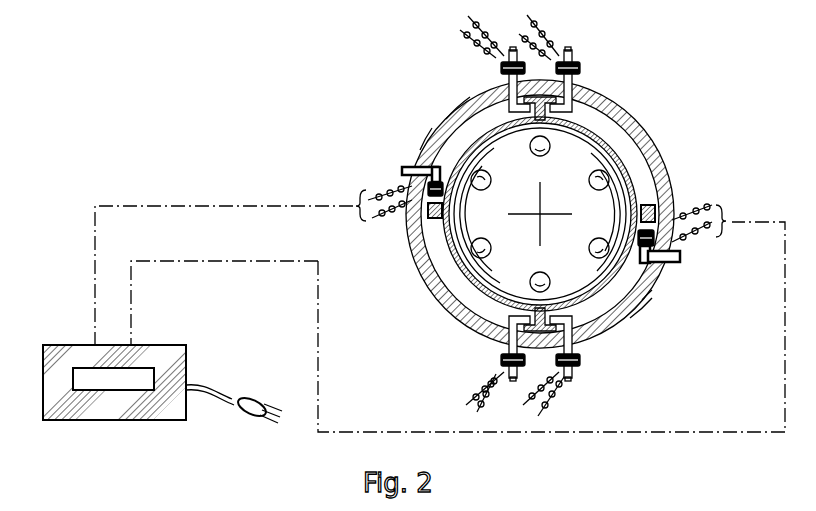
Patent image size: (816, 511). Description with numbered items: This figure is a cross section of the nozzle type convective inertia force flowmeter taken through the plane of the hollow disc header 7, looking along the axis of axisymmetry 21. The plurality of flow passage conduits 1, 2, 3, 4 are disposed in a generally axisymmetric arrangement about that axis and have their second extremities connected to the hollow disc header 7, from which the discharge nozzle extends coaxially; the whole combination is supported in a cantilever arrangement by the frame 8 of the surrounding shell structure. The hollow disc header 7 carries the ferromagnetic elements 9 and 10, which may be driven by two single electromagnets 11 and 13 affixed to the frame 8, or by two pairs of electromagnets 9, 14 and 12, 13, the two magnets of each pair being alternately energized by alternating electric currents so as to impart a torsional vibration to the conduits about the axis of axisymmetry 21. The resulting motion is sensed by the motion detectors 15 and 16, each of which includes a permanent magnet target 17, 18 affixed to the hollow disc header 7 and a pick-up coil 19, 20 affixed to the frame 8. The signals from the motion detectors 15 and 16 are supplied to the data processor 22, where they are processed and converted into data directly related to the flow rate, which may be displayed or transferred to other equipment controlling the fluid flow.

The flow passage conduit 1 is at (640, 140).
The flow passage conduit 2 is at (640, 188).
The flow passage conduit 3 is at (642, 302).
The flow passage conduit 4 is at (585, 312).
The hollow disc header 7 is at (458, 256).
The frame 8 is at (446, 118).
The ferromagnetic element 9 is at (560, 142).
The ferromagnetic element 10 is at (500, 296).
The electromagnet 11 is at (586, 106).
The electromagnet 12 is at (580, 332).
The electromagnet 13 is at (522, 222).
The electromagnet 14 is at (500, 108).
The motion detector 15 is at (400, 174).
The motion detector 16 is at (682, 254).
The permanent magnet target 17 is at (414, 236).
The permanent magnet target 18 is at (652, 202).
The pick-up coil 19 is at (423, 142).
The pick-up coil 20 is at (652, 284).
The axis of axisymmetry 21 is at (480, 292).
The data processor 22 is at (108, 405).